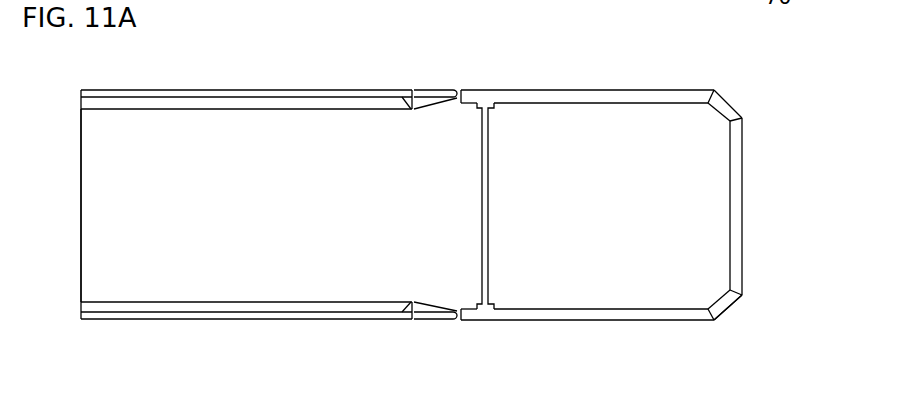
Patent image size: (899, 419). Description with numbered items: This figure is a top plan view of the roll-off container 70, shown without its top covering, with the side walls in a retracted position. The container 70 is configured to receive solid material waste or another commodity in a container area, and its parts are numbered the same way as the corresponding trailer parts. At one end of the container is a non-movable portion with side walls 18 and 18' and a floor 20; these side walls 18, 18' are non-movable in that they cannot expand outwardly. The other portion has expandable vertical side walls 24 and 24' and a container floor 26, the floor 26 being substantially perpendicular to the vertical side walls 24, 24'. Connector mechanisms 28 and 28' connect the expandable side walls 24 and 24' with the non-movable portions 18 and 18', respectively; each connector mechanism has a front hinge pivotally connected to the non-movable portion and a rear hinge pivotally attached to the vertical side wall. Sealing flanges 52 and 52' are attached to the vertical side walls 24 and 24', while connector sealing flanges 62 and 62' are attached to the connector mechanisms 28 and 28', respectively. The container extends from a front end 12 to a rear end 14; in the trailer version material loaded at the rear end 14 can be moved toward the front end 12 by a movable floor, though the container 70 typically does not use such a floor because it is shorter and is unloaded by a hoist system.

The front end 12 is at (752, 128).
The rear end 14 is at (70, 135).
The side wall 18 is at (587, 357).
The side wall 18' is at (587, 58).
The floor 20 is at (683, 234).
The side wall 24 is at (246, 358).
The side wall 24' is at (246, 55).
The floor 26 is at (126, 200).
The connector mechanism 28 is at (426, 360).
The connector mechanism 28' is at (454, 49).
The sealing flange 52 is at (246, 259).
The sealing flange 52' is at (246, 152).
The connector sealing flange 62 is at (435, 263).
The connector sealing flange 62' is at (435, 146).
The roll-off container 70 is at (722, 335).